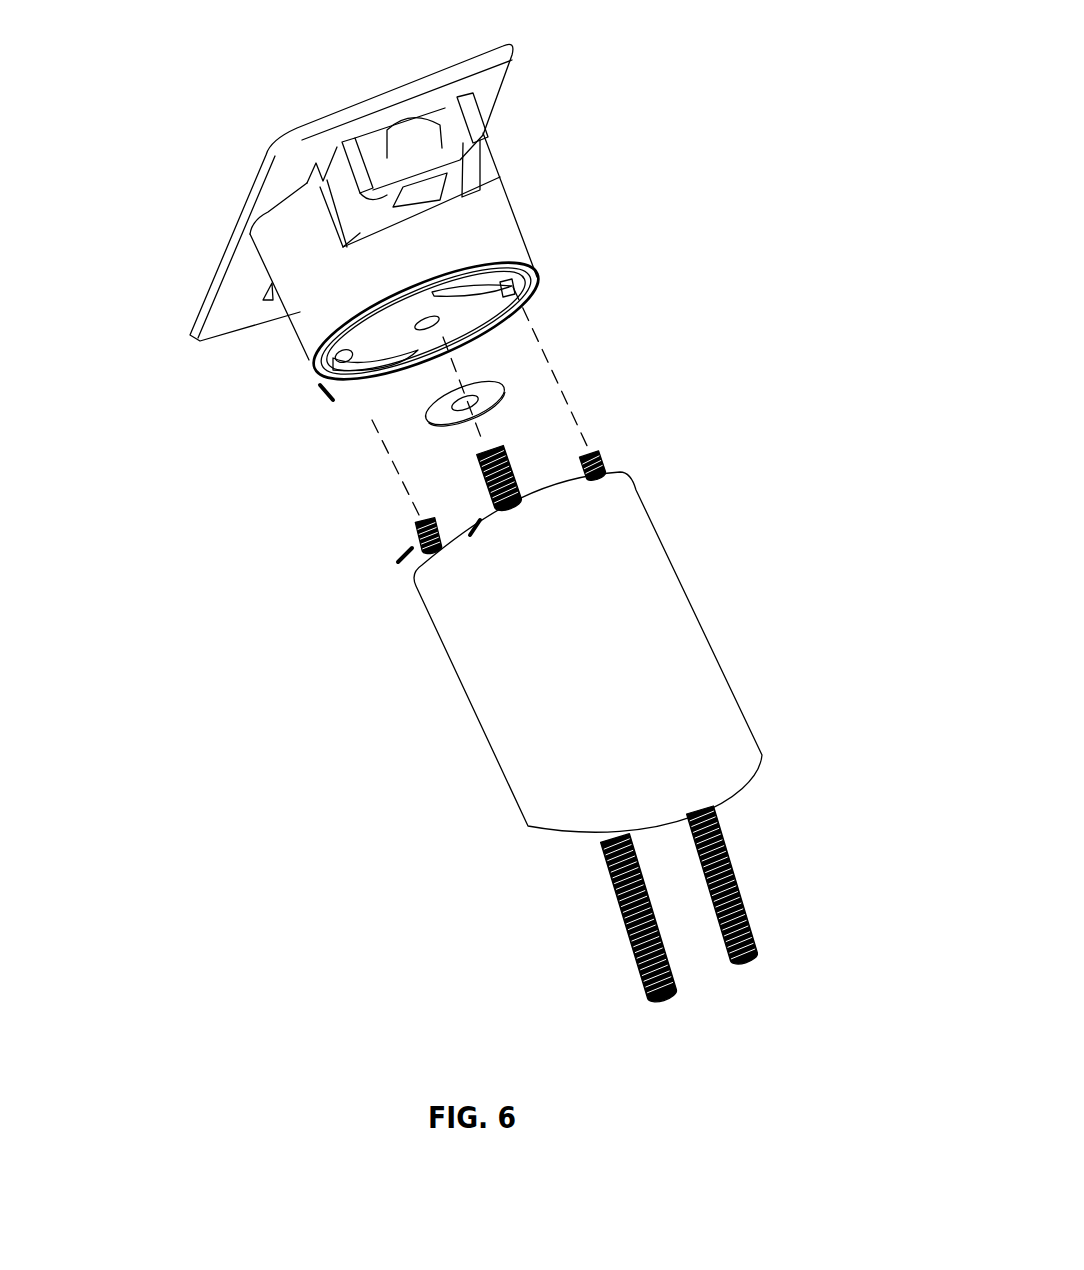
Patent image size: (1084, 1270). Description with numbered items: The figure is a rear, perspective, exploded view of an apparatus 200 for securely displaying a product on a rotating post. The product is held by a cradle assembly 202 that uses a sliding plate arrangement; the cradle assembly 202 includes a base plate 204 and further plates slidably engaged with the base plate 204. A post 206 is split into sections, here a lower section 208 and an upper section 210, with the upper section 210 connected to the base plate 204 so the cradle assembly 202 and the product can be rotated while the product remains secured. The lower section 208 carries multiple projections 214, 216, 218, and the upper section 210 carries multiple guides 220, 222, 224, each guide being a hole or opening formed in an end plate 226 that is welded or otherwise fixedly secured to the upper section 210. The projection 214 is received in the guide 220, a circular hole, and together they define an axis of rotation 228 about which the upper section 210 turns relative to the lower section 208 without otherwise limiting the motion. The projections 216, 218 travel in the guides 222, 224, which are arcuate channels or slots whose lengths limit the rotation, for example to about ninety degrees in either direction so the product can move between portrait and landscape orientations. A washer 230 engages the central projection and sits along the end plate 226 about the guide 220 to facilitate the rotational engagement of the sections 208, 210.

The apparatus 200 is at (730, 50).
The cradle assembly 202 is at (181, 253).
The base plate 204 is at (514, 52).
The post 206 is at (917, 670).
The lower section 208 is at (677, 564).
The upper section 210 is at (505, 197).
The projection 214 is at (493, 505).
The projection 216 is at (420, 540).
The projection 218 is at (612, 458).
The guide 220 is at (425, 336).
The guide 222 is at (324, 394).
The guide 224 is at (525, 284).
The end plate 226 is at (406, 318).
The axis of rotation 228 is at (452, 366).
The washer 230 is at (505, 390).